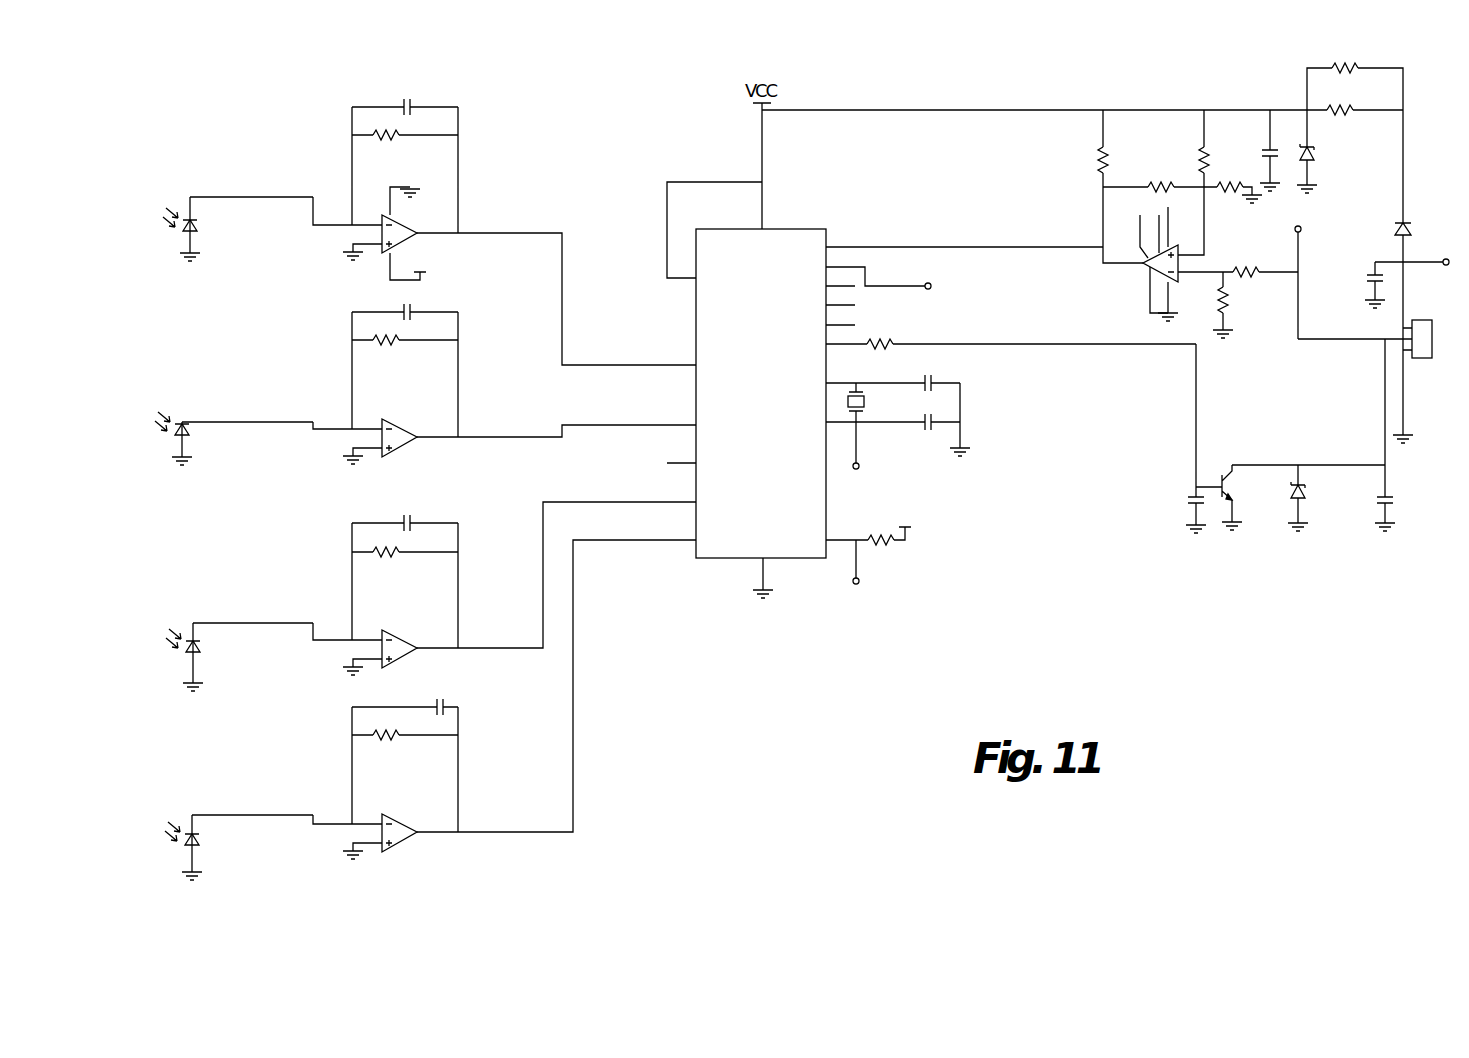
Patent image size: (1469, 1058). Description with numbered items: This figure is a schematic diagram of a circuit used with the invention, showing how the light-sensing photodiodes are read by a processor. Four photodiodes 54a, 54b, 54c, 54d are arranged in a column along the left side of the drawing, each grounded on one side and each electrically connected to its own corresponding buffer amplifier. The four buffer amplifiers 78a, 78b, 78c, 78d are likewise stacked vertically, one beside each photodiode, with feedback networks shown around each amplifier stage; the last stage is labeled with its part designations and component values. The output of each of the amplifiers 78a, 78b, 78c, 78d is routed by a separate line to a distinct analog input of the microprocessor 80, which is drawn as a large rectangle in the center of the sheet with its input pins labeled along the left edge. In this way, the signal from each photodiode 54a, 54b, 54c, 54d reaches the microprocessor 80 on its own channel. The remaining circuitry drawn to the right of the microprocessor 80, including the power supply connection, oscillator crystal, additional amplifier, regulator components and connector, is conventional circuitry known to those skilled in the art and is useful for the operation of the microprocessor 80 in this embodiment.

The photodiode 54a is at (186, 243).
The photodiode 54b is at (178, 453).
The photodiode 54c is at (186, 666).
The photodiode 54d is at (188, 843).
The buffer amplifier 78a is at (472, 215).
The buffer amplifier 78b is at (472, 425).
The buffer amplifier 78c is at (472, 638).
The buffer amplifier 78d is at (468, 827).
The microprocessor 80 is at (828, 482).